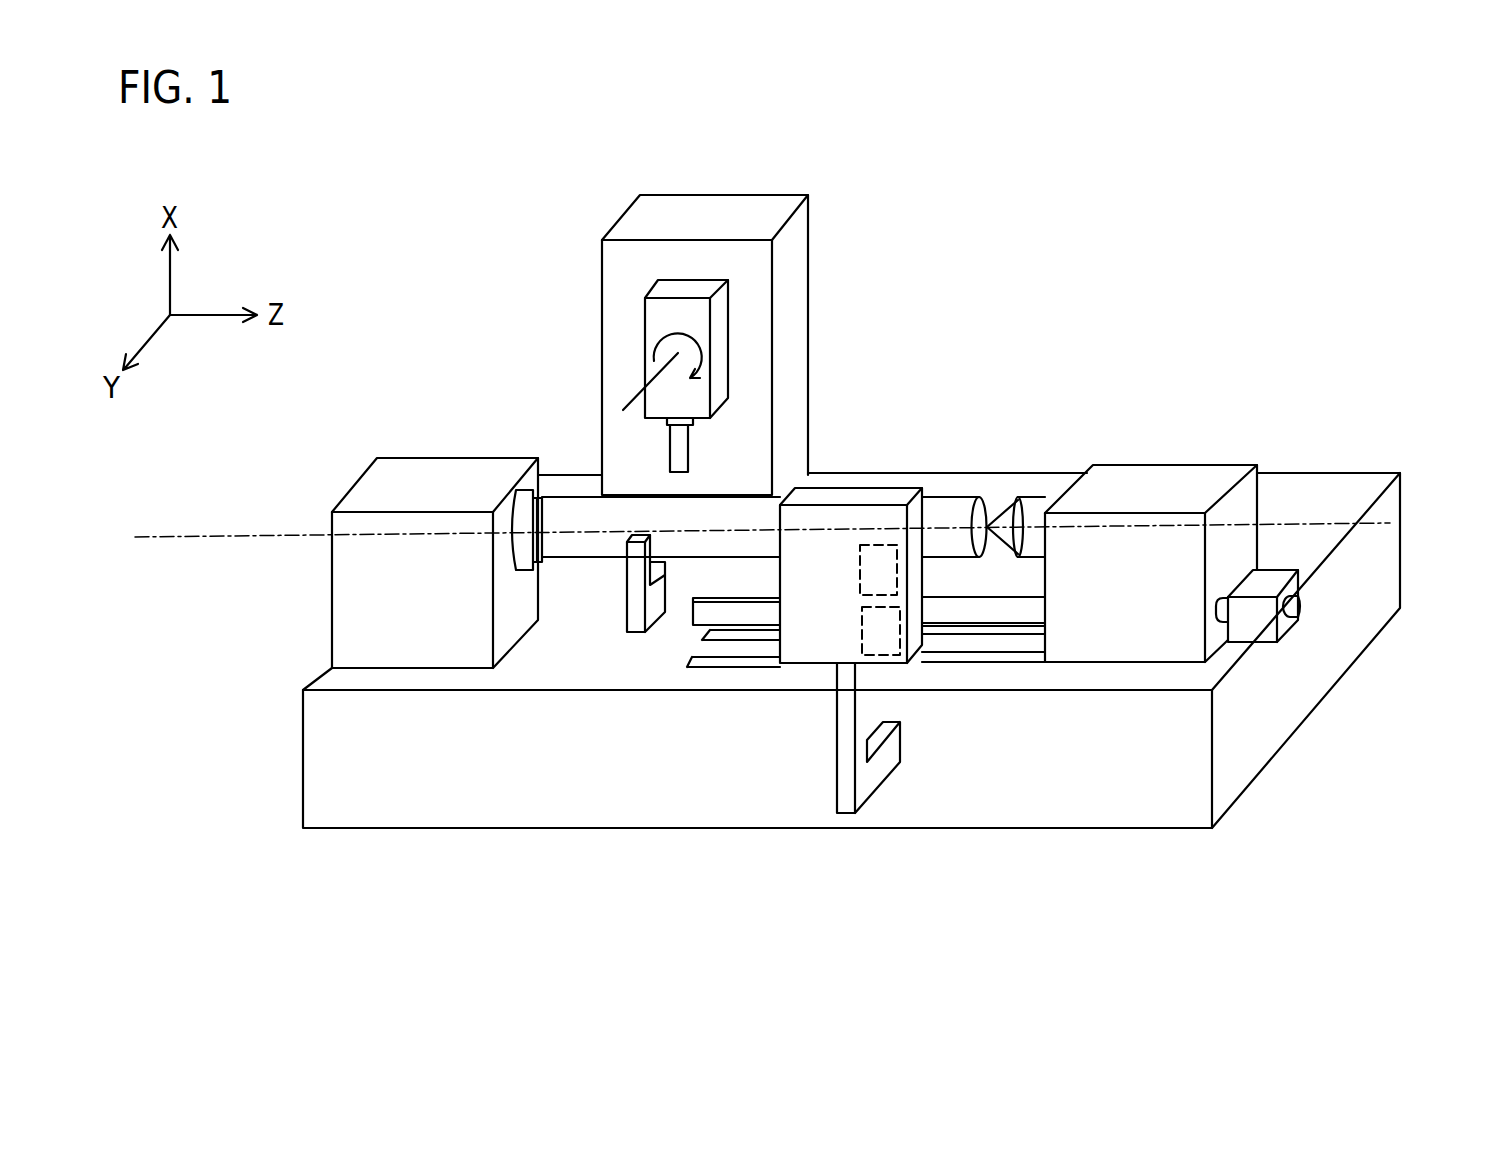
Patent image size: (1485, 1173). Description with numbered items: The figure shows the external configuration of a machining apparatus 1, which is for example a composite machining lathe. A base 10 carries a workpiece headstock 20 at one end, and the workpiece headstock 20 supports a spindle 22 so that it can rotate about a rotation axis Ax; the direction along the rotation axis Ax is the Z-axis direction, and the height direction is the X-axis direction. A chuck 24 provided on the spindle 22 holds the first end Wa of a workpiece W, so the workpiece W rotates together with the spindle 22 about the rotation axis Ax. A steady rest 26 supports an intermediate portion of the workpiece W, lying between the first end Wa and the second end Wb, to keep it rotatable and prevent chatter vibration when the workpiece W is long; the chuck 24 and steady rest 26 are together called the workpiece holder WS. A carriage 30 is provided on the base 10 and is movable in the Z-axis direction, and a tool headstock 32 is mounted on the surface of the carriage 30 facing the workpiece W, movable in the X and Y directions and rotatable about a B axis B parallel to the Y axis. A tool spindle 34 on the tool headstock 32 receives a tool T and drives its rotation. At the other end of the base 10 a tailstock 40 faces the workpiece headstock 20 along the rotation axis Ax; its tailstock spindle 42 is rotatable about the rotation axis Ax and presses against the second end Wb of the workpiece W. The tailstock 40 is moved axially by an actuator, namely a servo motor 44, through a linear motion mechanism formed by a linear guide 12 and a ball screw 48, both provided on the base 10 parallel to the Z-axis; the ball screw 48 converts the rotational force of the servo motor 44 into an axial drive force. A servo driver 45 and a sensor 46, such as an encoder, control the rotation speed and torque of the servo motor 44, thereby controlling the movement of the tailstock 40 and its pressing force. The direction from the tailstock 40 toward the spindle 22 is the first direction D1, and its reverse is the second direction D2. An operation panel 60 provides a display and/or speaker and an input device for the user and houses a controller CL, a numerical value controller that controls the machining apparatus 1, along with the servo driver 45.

The machining apparatus 1 is at (1399, 943).
The base 10 is at (327, 745).
The linear guide 12 is at (740, 660).
The workpiece headstock 20 is at (383, 487).
The spindle 22 is at (522, 503).
The chuck 24 is at (538, 620).
The steady rest 26 is at (643, 615).
The carriage 30 is at (727, 220).
The tool headstock 32 is at (648, 317).
The tool spindle 34 is at (697, 422).
The tailstock 40 is at (1242, 503).
The tailstock spindle 42 is at (1033, 510).
The servo motor 44 is at (1262, 627).
The servo driver 45 is at (897, 660).
The sensor 46 is at (1300, 605).
The ball screw 48 is at (1007, 608).
The operation panel 60 is at (845, 555).
The workpiece W is at (588, 517).
The first end Wa is at (547, 518).
The second end Wb is at (978, 510).
The workpiece holder WS is at (625, 900).
The rotation axis Ax is at (222, 537).
The B axis B is at (657, 388).
The tool T is at (687, 462).
The controller CL is at (893, 563).
The first direction D1 is at (975, 234).
The second direction D2 is at (962, 188).